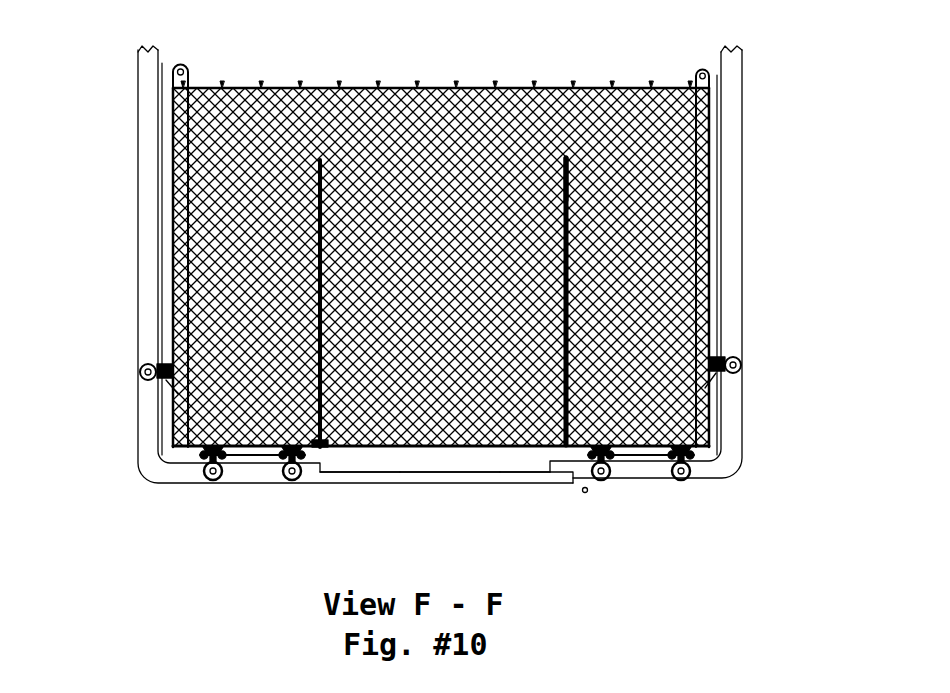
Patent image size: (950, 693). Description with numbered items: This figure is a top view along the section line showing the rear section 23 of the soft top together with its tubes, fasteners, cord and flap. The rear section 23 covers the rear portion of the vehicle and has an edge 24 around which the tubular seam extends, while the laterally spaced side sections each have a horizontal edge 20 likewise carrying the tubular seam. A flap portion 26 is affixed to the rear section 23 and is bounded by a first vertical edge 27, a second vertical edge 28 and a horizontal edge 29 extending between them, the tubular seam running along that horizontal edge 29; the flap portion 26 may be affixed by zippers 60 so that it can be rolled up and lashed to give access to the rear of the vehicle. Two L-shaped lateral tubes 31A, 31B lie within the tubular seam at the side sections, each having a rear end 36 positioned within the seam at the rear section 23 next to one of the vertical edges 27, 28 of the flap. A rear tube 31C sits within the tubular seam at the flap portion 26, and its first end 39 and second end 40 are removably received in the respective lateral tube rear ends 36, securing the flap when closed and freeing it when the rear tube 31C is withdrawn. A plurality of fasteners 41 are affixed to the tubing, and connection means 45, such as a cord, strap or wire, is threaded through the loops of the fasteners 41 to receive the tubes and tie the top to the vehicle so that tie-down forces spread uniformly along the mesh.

The horizontal edge 20 is at (168, 195).
The rear section 23 is at (432, 132).
The rear section edge 24 is at (452, 447).
The flap portion 26 is at (445, 260).
The first vertical edge 27 is at (313, 263).
The second vertical edge 28 is at (567, 195).
The horizontal edge 29 is at (377, 447).
The L-shaped lateral tube 31A is at (172, 124).
The L-shaped lateral tube 31B is at (712, 300).
The rear tube 31C is at (513, 447).
The rear end 36 is at (318, 438).
The first end 39 is at (330, 445).
The second end 40 is at (572, 470).
The fasteners 41 is at (142, 370).
The connection means 45 is at (161, 140).
The zippers 60 is at (565, 295).